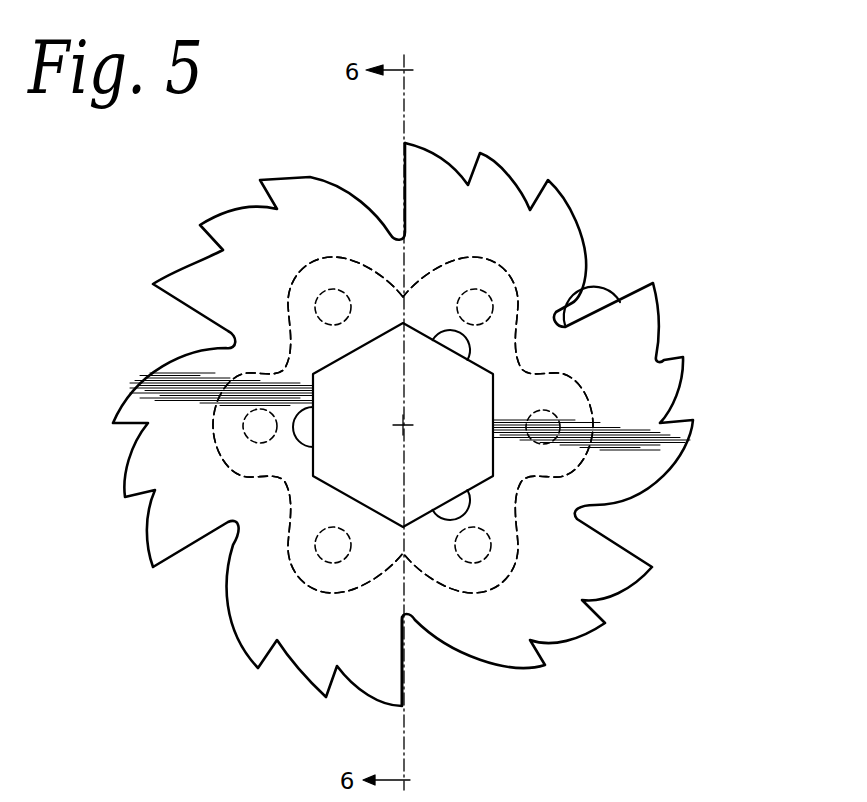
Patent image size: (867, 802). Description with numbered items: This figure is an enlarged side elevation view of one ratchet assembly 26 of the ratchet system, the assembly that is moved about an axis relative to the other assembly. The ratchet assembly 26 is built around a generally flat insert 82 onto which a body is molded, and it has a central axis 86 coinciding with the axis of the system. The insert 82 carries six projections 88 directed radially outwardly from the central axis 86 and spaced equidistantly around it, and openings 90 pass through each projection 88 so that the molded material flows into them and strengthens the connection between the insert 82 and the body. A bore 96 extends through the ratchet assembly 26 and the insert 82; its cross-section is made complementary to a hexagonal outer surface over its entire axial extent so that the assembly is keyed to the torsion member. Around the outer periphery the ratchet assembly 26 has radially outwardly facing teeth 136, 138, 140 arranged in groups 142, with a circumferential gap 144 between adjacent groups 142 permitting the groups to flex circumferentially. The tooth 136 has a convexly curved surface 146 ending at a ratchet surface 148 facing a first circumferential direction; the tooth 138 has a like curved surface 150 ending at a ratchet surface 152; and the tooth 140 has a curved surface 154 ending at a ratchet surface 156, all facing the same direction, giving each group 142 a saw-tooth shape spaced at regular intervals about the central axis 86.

The ratchet assembly 26 is at (510, 240).
The insert 82 is at (298, 600).
The central axis 86 is at (406, 422).
The projections 88 is at (298, 294).
The openings 90 is at (345, 312).
The bore 96 is at (333, 487).
The tooth 136 is at (533, 138).
The tooth 138 is at (487, 167).
The tooth 140 is at (552, 197).
The groups 142 is at (443, 162).
The circumferential gap 144 is at (337, 183).
The convexly curved surface 146 is at (423, 160).
The ratchet surface 148 is at (405, 177).
The curved surface 150 is at (518, 183).
The ratchet surface 152 is at (468, 166).
The curved surface 154 is at (571, 212).
The ratchet surface 156 is at (527, 197).